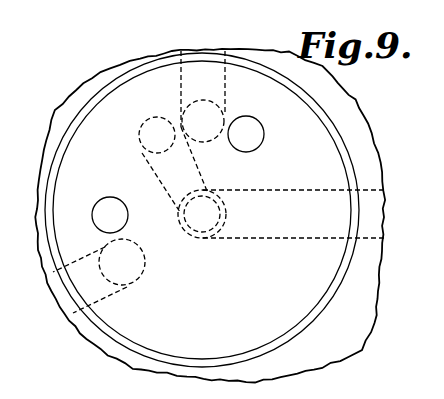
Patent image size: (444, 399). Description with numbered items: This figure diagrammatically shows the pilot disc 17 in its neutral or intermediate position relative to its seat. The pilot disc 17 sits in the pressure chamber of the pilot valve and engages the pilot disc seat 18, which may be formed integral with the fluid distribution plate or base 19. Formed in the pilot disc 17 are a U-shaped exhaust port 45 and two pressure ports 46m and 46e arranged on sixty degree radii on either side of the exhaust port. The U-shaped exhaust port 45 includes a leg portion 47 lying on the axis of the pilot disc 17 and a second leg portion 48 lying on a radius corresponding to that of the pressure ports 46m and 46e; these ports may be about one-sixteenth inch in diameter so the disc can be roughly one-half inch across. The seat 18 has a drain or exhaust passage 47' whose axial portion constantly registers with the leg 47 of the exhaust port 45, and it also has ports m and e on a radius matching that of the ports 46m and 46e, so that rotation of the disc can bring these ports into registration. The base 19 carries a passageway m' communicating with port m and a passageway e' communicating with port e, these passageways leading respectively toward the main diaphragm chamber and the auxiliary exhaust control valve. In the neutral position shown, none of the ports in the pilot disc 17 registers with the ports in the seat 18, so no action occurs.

The pilot disc 17 is at (70, 153).
The pilot disc seat 18 is at (138, 70).
The fluid distribution plate or base 19 is at (82, 98).
The U-shaped exhaust port 45 is at (194, 170).
The pressure port 46e is at (258, 147).
The pressure port 46m is at (110, 199).
The leg portion of exhaust port 47 is at (187, 207).
The drain or exhaust passage 47' is at (294, 238).
The second leg portion of exhaust port 48 is at (141, 127).
The port e is at (203, 104).
The passageway e' is at (203, 72).
The port m is at (138, 263).
The passageway m' is at (84, 312).